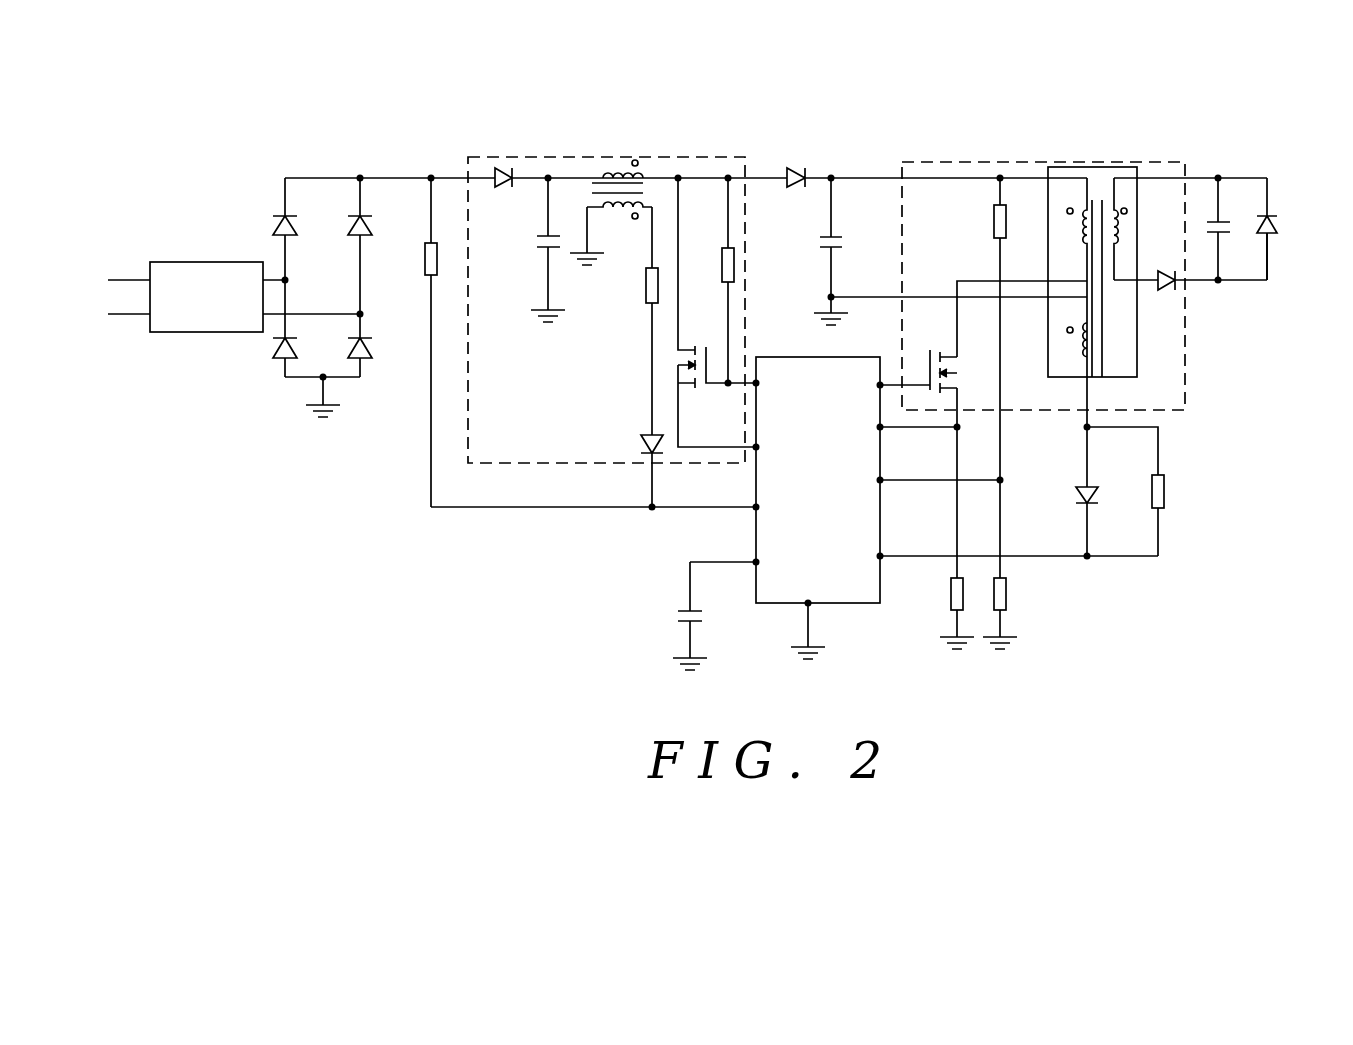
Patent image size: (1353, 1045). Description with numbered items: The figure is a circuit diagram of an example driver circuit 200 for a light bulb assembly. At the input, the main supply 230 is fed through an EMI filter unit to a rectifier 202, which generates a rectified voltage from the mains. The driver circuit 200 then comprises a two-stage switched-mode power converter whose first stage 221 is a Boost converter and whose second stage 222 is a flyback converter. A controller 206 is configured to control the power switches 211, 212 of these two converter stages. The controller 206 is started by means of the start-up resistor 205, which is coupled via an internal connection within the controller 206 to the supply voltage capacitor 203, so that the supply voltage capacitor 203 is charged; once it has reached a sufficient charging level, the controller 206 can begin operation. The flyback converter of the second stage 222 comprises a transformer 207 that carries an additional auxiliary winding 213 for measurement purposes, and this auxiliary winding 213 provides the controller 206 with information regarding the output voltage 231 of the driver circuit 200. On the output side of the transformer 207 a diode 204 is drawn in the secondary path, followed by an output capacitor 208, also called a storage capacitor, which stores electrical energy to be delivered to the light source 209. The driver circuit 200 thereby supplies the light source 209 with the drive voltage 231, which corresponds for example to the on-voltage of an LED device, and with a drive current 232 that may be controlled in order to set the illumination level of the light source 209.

The driver circuit 200 is at (216, 140).
The rectifier 202 is at (311, 178).
The supply voltage capacitor 203 is at (677, 620).
The output diode 204 is at (1168, 297).
The start-up resistor 205 is at (422, 247).
The controller 206 is at (758, 607).
The transformer 207 is at (1113, 377).
The output capacitor 208 is at (1217, 284).
The light source 209 is at (1277, 242).
The power switch 211 is at (690, 347).
The power switch 212 is at (945, 350).
The auxiliary winding 213 is at (1077, 348).
The first stage 221 is at (532, 467).
The second stage 222 is at (1187, 357).
The main supply 230 is at (125, 348).
The output voltage 231 is at (1223, 173).
The drive current 232 is at (1268, 285).